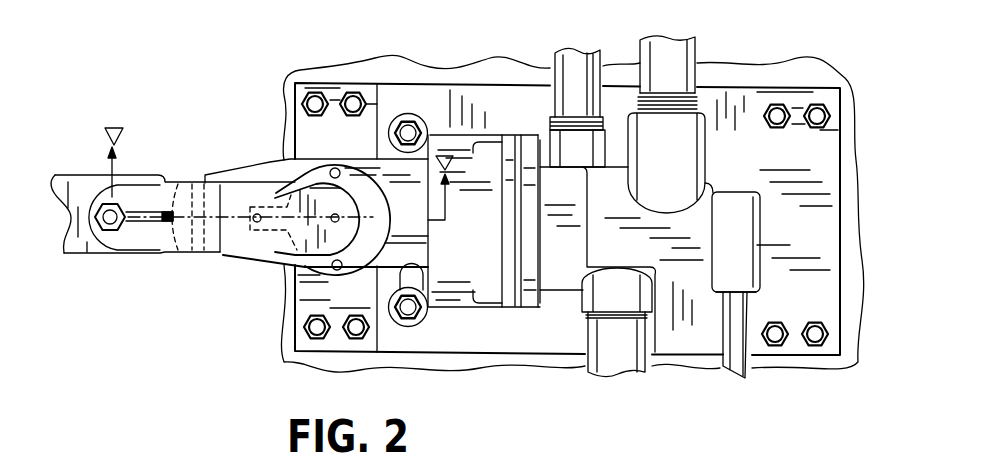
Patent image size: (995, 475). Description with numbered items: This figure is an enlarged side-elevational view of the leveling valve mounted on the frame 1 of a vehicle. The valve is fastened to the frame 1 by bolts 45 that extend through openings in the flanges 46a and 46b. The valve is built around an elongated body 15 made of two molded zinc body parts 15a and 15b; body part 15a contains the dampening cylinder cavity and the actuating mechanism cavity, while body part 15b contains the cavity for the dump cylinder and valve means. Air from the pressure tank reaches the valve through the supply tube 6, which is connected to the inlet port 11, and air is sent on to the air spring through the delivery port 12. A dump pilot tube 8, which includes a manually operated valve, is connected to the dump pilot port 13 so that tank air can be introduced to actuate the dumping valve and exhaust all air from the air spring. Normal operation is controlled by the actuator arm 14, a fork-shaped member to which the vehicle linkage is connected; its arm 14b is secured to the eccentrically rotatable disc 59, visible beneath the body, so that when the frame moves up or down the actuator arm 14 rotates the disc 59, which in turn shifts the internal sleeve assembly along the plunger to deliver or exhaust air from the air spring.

The frame 1 is at (770, 84).
The supply tube 6 is at (697, 52).
The dump pilot tube 8 is at (560, 60).
The inlet port 11 is at (627, 63).
The delivery port 12 is at (658, 305).
The dump pilot port 13 is at (547, 138).
The actuator arm 14 is at (185, 182).
The arm of actuator member 14b is at (254, 243).
The elongated body 15 is at (510, 300).
The body part 15a is at (282, 160).
The body part 15b is at (713, 197).
The bolts 45 is at (413, 121).
The flange 46a is at (393, 322).
The flange 46b is at (396, 116).
The eccentrically rotatable disc 59 is at (303, 264).